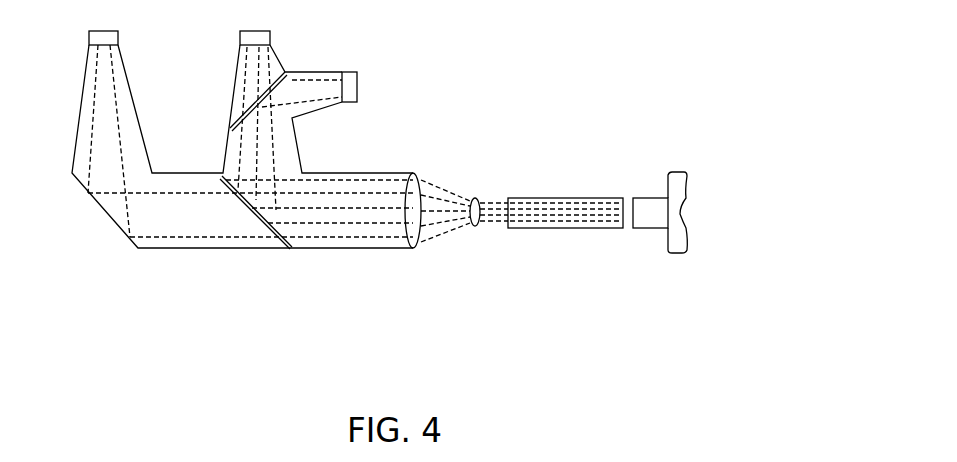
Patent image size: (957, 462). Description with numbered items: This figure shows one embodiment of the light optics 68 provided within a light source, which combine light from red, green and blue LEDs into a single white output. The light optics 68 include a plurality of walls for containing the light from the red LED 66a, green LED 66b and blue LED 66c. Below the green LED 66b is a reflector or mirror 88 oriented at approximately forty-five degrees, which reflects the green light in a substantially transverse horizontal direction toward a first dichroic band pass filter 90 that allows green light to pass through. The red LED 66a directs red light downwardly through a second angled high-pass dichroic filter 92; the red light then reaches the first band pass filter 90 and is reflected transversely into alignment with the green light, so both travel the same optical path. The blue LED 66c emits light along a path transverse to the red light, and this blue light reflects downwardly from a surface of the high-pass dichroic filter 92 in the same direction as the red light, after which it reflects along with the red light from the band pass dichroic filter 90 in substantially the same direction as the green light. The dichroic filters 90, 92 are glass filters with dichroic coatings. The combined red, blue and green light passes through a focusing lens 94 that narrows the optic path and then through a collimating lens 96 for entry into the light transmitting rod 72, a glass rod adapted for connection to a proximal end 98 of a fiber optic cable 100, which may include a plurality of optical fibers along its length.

The light optics 68 is at (373, 304).
The red LED 66a is at (263, 36).
The green LED 66b is at (108, 36).
The blue LED 66c is at (357, 85).
The light transmitting rod 72 is at (538, 198).
The reflector 88 is at (107, 215).
The first dichroic band pass filter 90 is at (260, 227).
The second angled high-pass dichroic filter 92 is at (257, 97).
The focusing lens 94 is at (413, 182).
The collimating lens 96 is at (477, 226).
The proximal end 98 is at (633, 198).
The fiber optic cable 100 is at (677, 174).